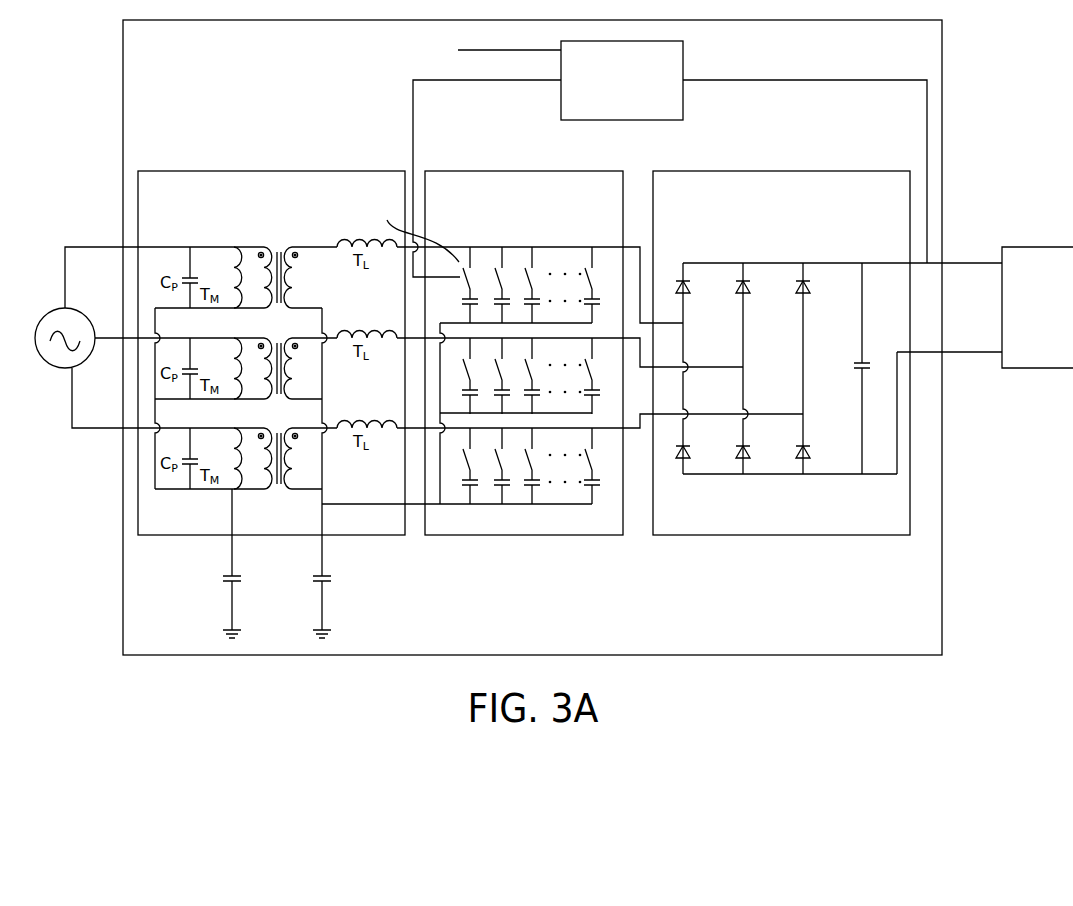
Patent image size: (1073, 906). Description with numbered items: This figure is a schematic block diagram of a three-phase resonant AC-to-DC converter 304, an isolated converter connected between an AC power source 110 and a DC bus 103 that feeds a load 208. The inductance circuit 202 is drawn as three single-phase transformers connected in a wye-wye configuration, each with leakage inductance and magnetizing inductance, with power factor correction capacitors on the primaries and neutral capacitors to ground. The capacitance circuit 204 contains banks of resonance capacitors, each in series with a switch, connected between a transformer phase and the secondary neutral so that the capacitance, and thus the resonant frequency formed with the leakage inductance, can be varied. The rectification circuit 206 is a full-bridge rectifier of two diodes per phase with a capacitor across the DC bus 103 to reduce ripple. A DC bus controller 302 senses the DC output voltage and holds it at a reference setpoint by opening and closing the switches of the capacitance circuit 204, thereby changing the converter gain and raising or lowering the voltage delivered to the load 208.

The AC power source 110 is at (146, 337).
The DC bus 103 is at (968, 354).
The inductance circuit 202 is at (470, 404).
The capacitance circuit 204 is at (472, 353).
The rectification circuit 206 is at (781, 353).
The load 208 is at (1037, 307).
The DC bus controller 302 is at (658, 159).
The three-phase resonant AC-to-DC converter 304 is at (515, 337).